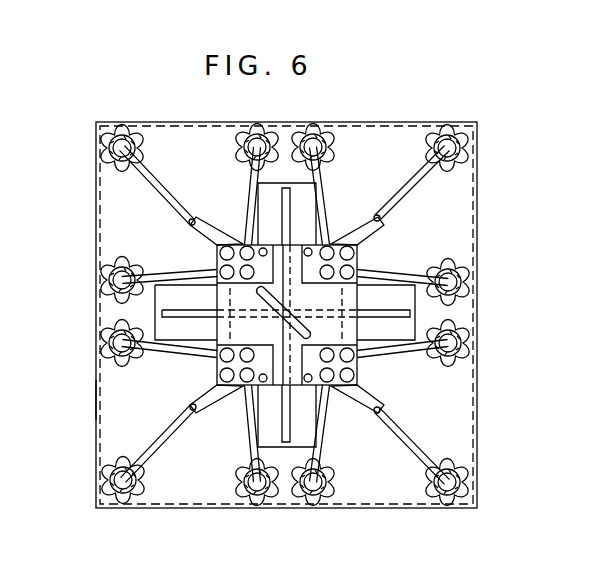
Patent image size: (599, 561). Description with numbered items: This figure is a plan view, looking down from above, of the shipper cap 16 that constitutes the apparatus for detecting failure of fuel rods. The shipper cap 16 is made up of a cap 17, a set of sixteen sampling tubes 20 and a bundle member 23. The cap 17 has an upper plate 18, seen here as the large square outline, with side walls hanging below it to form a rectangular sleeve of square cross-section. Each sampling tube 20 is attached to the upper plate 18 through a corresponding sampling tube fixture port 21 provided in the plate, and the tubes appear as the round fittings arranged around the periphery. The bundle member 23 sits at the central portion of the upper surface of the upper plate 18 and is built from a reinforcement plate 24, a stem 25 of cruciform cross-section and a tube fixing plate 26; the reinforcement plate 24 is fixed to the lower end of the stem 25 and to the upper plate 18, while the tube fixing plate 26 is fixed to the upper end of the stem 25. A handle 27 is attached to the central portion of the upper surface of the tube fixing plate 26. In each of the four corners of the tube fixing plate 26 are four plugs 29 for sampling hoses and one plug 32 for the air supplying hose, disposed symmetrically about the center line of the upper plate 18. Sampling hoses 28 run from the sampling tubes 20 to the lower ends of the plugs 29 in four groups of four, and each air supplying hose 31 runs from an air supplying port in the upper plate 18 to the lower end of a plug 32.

The shipper cap 16 is at (483, 201).
The cap 17 is at (480, 400).
The upper plate 18 is at (108, 397).
The sampling tube 20 is at (145, 481).
The sampling tube fixture port 21 is at (107, 480).
The bundle member 23 is at (215, 256).
The reinforcement plate 24 is at (382, 292).
The stem 25 is at (288, 425).
The tube fixing plate 26 is at (357, 338).
The handle 27 is at (303, 325).
The sampling hose 28 is at (405, 190).
The plug for sampling hoses 29 is at (212, 359).
The air supplying hose 31 is at (352, 228).
The plug for air supplying hose 32 is at (253, 390).